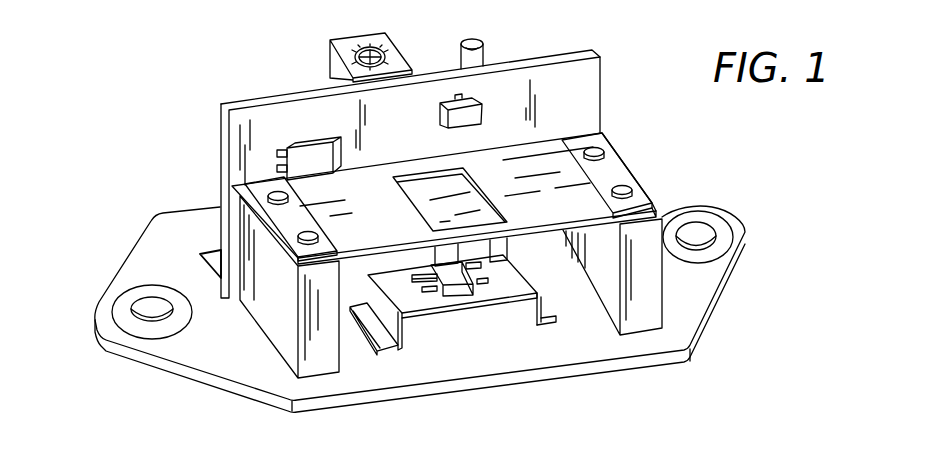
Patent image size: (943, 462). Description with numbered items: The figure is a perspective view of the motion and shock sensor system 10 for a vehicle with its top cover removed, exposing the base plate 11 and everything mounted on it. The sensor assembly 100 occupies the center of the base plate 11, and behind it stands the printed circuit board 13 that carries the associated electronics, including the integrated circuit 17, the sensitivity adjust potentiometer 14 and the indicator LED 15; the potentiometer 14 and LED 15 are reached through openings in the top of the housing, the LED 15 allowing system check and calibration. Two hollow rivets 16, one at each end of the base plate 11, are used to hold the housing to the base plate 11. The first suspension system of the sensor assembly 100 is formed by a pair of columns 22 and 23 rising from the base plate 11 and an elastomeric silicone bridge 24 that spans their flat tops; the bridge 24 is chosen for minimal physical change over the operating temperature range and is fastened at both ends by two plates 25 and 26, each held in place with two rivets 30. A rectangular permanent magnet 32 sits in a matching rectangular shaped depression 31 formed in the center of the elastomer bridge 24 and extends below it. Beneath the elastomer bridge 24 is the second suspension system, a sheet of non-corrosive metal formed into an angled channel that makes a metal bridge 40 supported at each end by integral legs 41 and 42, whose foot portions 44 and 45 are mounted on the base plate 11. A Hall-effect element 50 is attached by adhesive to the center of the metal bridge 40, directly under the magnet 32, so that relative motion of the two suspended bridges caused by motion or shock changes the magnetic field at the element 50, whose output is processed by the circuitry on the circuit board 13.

The system 10 is at (698, 365).
The base plate 11 is at (697, 281).
The printed circuit board 13 is at (233, 134).
The sensitivity adjust potentiometer 14 is at (371, 50).
The indicator light emitting diode 15 is at (478, 48).
The hollow rivets 16 is at (138, 318).
The integrated circuit 17 is at (318, 161).
The column 22 is at (282, 326).
The column 23 is at (637, 296).
The elastomeric silicone bridge 24 is at (552, 160).
The plate 25 is at (289, 226).
The plate 26 is at (630, 173).
The rivets 30 is at (309, 232).
The rectangular shaped depression 31 is at (475, 246).
The rectangular permanent magnet 32 is at (492, 206).
The metal bridge 40 is at (408, 297).
The leg 41 is at (394, 326).
The leg 42 is at (525, 302).
The foot portion 44 is at (387, 345).
The foot portion 45 is at (558, 326).
The Hall-effect element 50 is at (457, 291).
The sensor assembly 100 is at (349, 358).